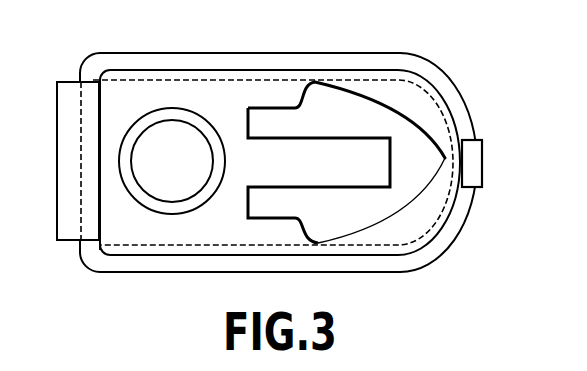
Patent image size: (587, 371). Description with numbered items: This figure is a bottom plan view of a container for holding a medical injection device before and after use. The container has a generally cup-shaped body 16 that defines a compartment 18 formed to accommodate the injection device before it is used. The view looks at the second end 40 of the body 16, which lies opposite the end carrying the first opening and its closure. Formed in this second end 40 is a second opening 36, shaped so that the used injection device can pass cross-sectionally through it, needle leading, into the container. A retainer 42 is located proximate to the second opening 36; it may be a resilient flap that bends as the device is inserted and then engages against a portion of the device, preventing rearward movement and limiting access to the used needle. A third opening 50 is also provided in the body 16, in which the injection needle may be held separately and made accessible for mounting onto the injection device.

The body 16 is at (430, 57).
The compartment 18 is at (381, 137).
The second opening 36 is at (340, 96).
The second end 40 is at (235, 90).
The retainer 42 is at (352, 184).
The third opening 50 is at (168, 192).